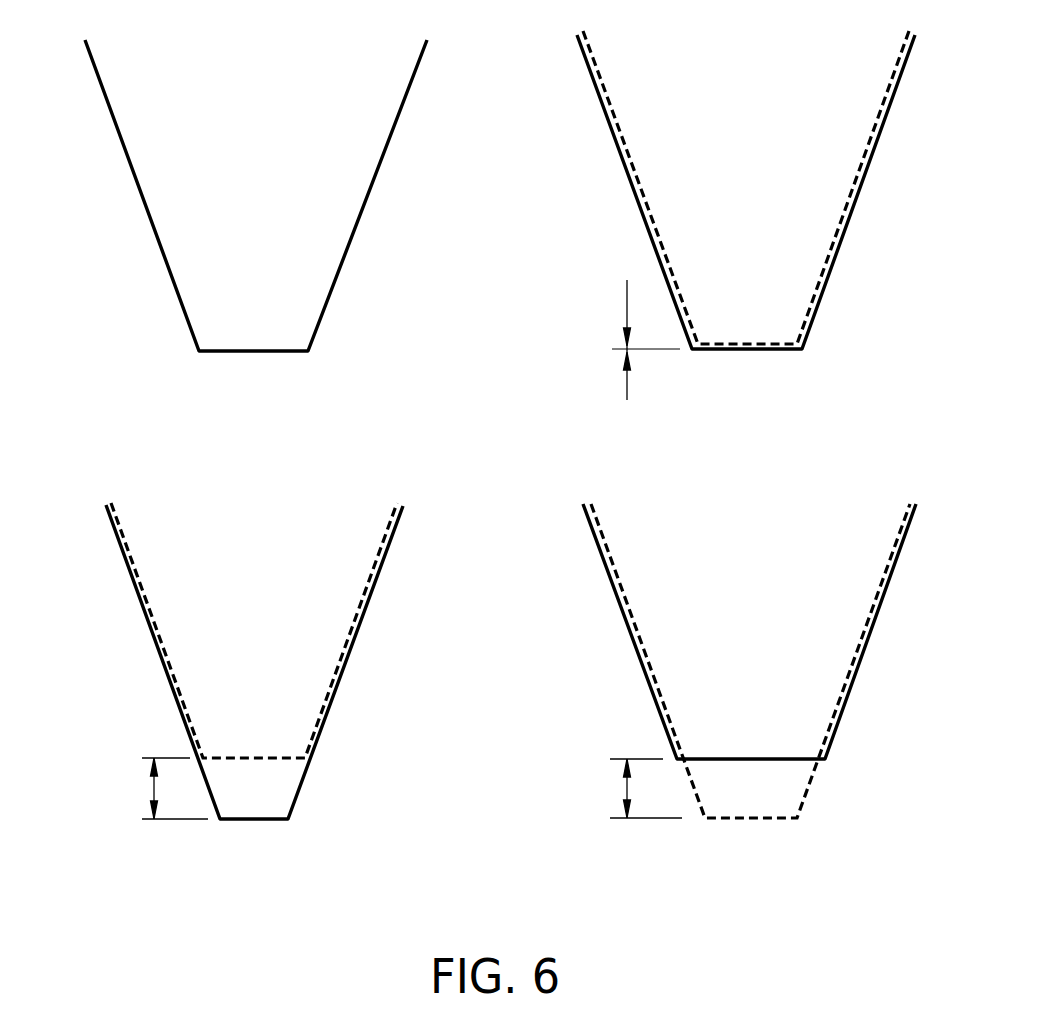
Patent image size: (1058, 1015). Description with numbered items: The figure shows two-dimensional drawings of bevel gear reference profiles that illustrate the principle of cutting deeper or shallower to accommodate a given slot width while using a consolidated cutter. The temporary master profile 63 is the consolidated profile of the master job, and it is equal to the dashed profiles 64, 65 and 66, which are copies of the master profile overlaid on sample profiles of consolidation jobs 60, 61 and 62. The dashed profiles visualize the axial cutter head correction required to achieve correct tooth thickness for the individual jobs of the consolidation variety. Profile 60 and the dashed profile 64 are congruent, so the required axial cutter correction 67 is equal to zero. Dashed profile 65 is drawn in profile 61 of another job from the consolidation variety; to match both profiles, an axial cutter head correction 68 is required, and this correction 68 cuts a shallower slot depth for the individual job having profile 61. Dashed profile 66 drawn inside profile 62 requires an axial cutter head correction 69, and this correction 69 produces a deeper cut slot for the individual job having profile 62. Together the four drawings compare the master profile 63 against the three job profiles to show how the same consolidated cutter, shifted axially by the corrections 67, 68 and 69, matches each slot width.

The sample profile of consolidation job 60 is at (842, 240).
The profile of another consolidation job 61 is at (365, 615).
The profile of consolidation job 62 is at (865, 653).
The temporary master profile 63 is at (146, 195).
The dashed master profile 64 is at (632, 153).
The dashed master profile 65 is at (157, 626).
The dashed master profile 66 is at (628, 602).
The axial cutter correction 67 is at (627, 298).
The axial cutter head correction 68 is at (154, 788).
The axial cutter head correction 69 is at (627, 789).